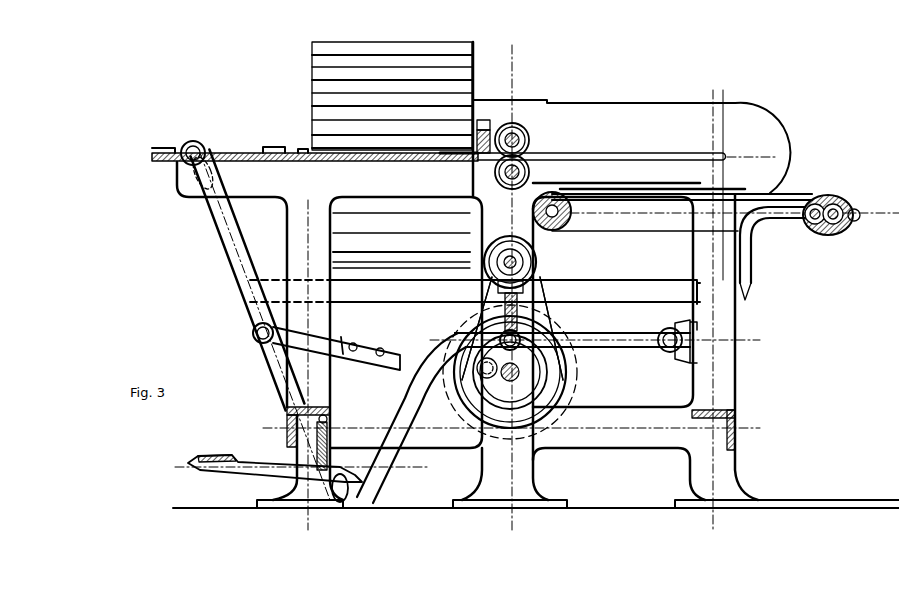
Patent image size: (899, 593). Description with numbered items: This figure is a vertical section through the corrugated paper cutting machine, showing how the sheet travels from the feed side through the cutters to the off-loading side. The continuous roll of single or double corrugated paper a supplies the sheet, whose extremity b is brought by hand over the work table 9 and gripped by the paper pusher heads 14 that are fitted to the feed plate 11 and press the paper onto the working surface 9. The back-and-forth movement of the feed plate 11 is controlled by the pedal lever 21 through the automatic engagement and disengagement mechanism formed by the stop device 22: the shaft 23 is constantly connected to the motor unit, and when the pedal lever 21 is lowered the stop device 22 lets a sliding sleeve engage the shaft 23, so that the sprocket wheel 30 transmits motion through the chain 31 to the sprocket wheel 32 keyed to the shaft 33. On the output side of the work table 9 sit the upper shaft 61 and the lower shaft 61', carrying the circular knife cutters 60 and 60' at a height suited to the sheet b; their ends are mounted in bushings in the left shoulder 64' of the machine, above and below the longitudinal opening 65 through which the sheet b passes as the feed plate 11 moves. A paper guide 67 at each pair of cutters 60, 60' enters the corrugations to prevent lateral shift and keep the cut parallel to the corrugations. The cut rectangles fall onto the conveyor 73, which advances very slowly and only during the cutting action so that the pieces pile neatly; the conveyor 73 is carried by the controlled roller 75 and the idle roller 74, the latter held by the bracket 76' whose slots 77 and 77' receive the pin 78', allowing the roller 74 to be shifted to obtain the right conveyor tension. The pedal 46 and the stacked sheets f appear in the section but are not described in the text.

The continuous roll of corrugated paper a is at (398, 60).
The extremity of the corrugated paper b is at (411, 162).
The work table 9 is at (262, 152).
The feed plate 11 is at (237, 152).
The paper pusher head 14 is at (294, 152).
The paper guide 67 is at (448, 162).
The circular knife cutter 60 is at (507, 110).
The upper shaft 61 is at (512, 108).
The lower shaft 61' is at (529, 105).
The circular knife cutter 60' is at (508, 180).
The shoulder 64' is at (631, 128).
The longitudinal opening 65 is at (574, 153).
The delivered sheets f is at (654, 188).
The conveyor 73 is at (770, 193).
The controlled roller 75 is at (562, 226).
The sprocket wheel 30 is at (537, 253).
The shaft 23 is at (517, 262).
The stop device 22 is at (525, 286).
The chain 31 is at (552, 308).
The sprocket wheel 32 is at (572, 345).
The shaft 33 is at (520, 370).
The pedal lever 21 is at (397, 395).
The foot pedal 46 is at (216, 458).
The slot 77 is at (828, 186).
The slot 77' is at (823, 188).
The idle roller 74 is at (837, 202).
The pin 78' is at (818, 223).
The bracket 76' is at (812, 253).